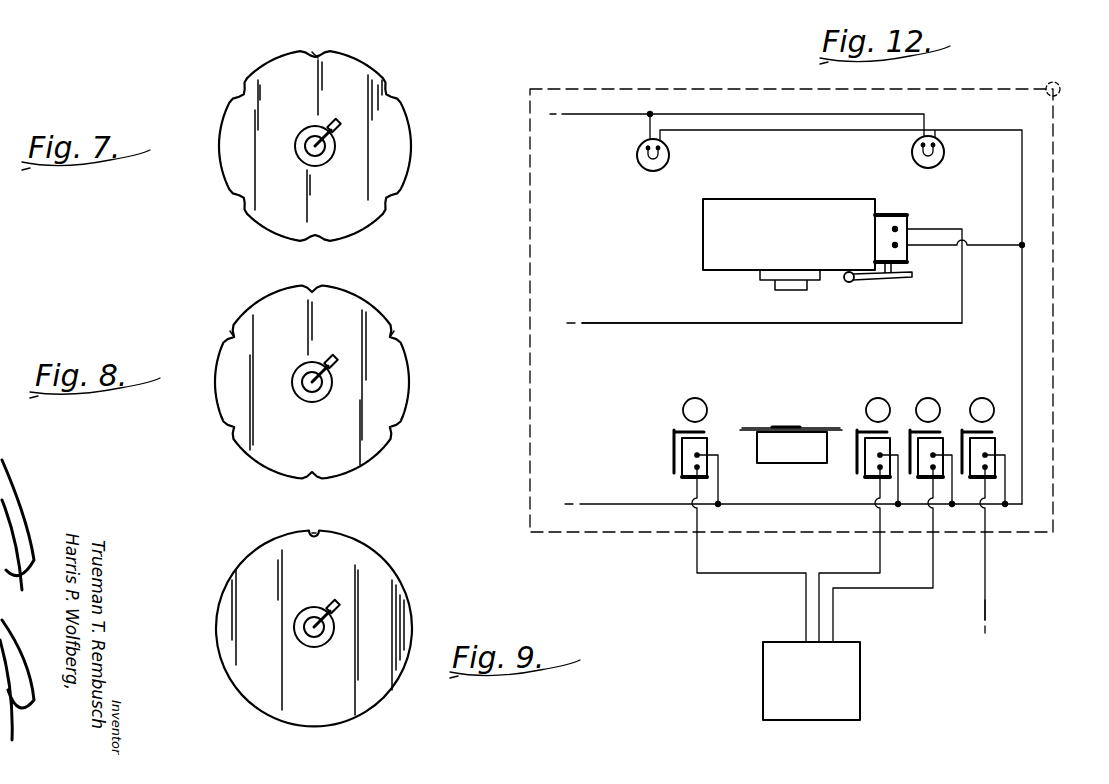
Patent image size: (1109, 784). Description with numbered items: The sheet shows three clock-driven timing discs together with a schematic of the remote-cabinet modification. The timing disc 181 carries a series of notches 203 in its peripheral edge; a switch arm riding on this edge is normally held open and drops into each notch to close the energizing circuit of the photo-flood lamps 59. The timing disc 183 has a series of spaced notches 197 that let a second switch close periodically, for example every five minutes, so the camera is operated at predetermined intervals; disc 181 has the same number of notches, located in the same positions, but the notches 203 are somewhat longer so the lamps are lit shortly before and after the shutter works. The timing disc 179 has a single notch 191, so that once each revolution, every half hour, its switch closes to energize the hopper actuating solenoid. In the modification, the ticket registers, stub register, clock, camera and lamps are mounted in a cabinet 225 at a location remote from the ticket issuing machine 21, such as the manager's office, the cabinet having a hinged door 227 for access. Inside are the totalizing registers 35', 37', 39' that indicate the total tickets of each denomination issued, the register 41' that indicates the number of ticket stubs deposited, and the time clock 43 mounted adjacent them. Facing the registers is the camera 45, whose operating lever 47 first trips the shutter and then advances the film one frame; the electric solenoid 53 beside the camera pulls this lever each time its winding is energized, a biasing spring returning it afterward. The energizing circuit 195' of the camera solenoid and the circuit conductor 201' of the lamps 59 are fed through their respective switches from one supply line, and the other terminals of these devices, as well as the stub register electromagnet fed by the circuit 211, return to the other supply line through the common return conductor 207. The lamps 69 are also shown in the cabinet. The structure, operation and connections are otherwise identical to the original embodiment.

In FIG. 7, the notches 203 is at (395, 94).
In FIG. 7, the timing disc 181 is at (395, 155).
In FIG. 8, the notches 197 is at (418, 325).
In FIG. 8, the timing disc 183 is at (385, 392).
In FIG. 9, the notch 191 is at (315, 530).
In FIG. 9, the timing disc 179 is at (378, 618).
In FIG. 12, the hinged door 227 is at (600, 90).
In FIG. 12, the cabinet 225 is at (1055, 186).
In FIG. 12, the energizing circuit 201' is at (787, 308).
In FIG. 12, the photo-flood lamps 59 is at (642, 166).
In FIG. 12, the lamp 69 is at (946, 154).
In FIG. 12, the camera 45 is at (789, 244).
In FIG. 12, the electric solenoid 53 is at (905, 220).
In FIG. 12, the operating lever 47 is at (864, 282).
In FIG. 12, the energizing circuit 195' is at (772, 342).
In FIG. 12, the totalizing register 35' is at (740, 509).
In FIG. 12, the totalizing register 37' is at (862, 508).
In FIG. 12, the totalizing register 39' is at (894, 508).
In FIG. 12, the totalizing register 41' is at (985, 503).
In FIG. 12, the time clock 43 is at (791, 445).
In FIG. 12, the common return conductor 207 is at (607, 503).
In FIG. 12, the circuit 211 is at (988, 606).
In FIG. 12, the ticket issuing machine 21 is at (811, 681).